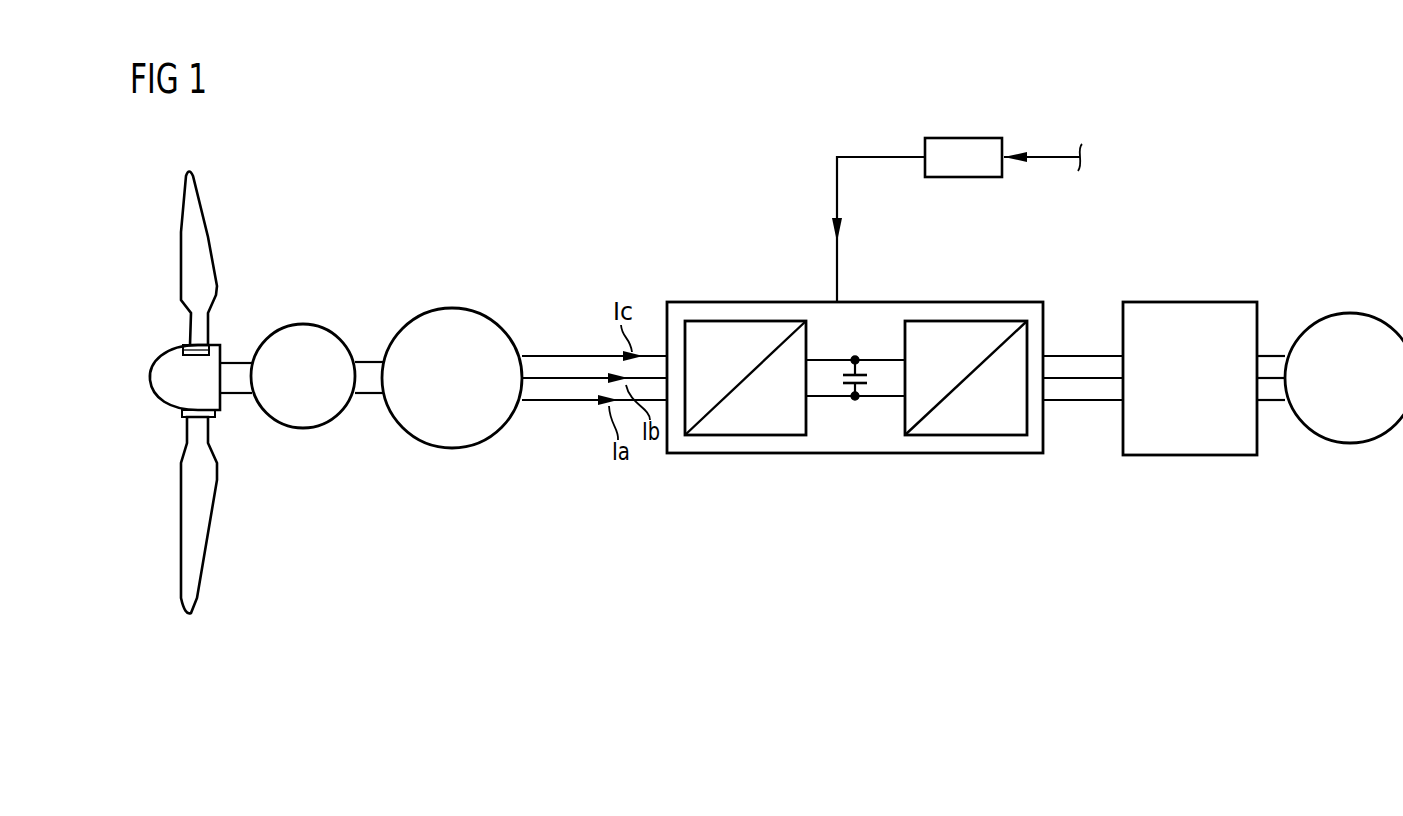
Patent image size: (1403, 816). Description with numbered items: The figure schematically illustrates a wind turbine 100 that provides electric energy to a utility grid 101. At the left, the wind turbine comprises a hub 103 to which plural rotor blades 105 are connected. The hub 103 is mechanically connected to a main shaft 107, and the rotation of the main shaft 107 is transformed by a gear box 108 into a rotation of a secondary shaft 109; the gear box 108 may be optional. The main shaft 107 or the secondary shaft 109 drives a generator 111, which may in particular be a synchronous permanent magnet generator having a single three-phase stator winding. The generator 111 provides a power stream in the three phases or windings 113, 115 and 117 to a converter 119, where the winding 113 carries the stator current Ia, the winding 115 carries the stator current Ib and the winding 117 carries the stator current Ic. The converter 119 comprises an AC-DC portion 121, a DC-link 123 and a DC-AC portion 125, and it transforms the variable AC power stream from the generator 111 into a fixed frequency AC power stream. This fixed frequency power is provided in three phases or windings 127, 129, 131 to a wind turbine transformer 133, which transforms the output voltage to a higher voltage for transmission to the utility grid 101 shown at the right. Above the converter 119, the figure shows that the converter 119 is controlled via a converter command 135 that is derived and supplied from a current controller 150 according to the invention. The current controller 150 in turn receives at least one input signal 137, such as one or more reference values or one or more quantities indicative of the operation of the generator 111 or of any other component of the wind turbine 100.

The wind turbine 100 is at (1292, 128).
The utility grid 101 is at (1347, 313).
The hub 103 is at (167, 350).
The rotor blades 105 is at (208, 239).
The main shaft 107 is at (238, 370).
The gear box 108 is at (308, 323).
The secondary shaft 109 is at (363, 370).
The generator 111 is at (452, 308).
The winding 113 is at (552, 403).
The winding 115 is at (552, 375).
The winding 117 is at (592, 352).
The converter 119 is at (855, 457).
The AC-DC portion 121 is at (745, 321).
The DC-link 123 is at (864, 336).
The DC-AC portion 125 is at (977, 321).
The winding 127 is at (1083, 402).
The winding 129 is at (1082, 376).
The winding 131 is at (1108, 352).
The wind turbine transformer 133 is at (1188, 302).
The converter command 135 is at (832, 228).
The input signal 137 is at (1005, 150).
The current controller 150 is at (963, 138).